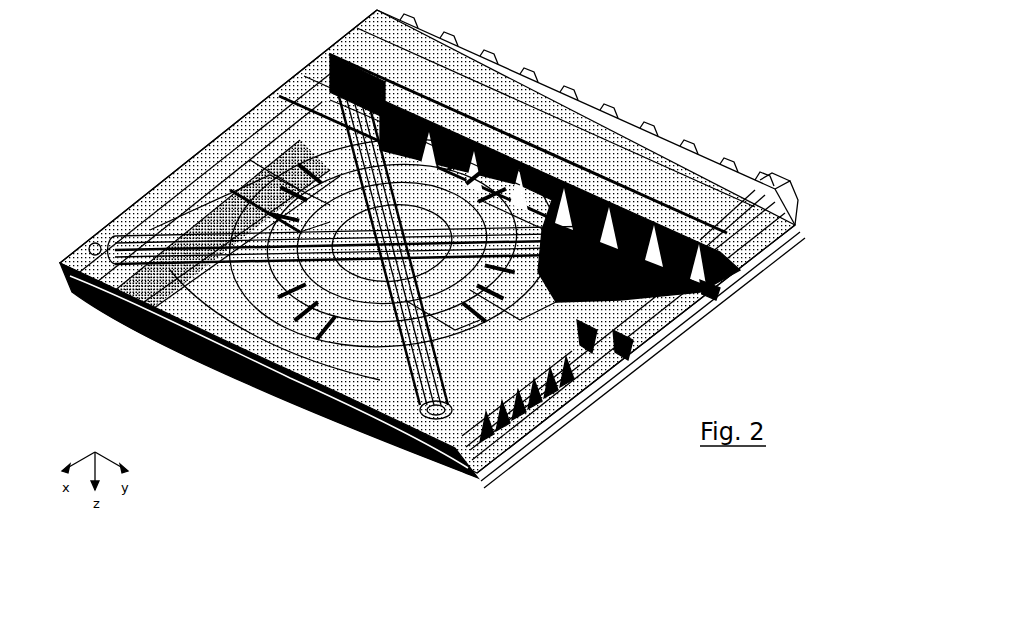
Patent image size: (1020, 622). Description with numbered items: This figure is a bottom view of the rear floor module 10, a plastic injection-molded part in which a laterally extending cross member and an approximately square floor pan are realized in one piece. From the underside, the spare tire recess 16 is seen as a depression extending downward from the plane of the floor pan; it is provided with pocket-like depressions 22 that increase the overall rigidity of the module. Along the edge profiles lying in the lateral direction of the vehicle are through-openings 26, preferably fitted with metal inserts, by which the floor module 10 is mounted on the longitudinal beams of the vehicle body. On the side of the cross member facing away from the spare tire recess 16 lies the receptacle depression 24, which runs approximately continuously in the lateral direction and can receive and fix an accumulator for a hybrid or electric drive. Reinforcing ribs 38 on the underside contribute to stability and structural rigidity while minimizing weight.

The rear floor module 10 is at (385, 480).
The spare tire recess 16 is at (285, 404).
The pocket-like depressions 22 is at (474, 342).
The receptacle depression 24 is at (562, 107).
The through-openings 26 is at (280, 116).
The reinforcing ribs 38 is at (660, 232).